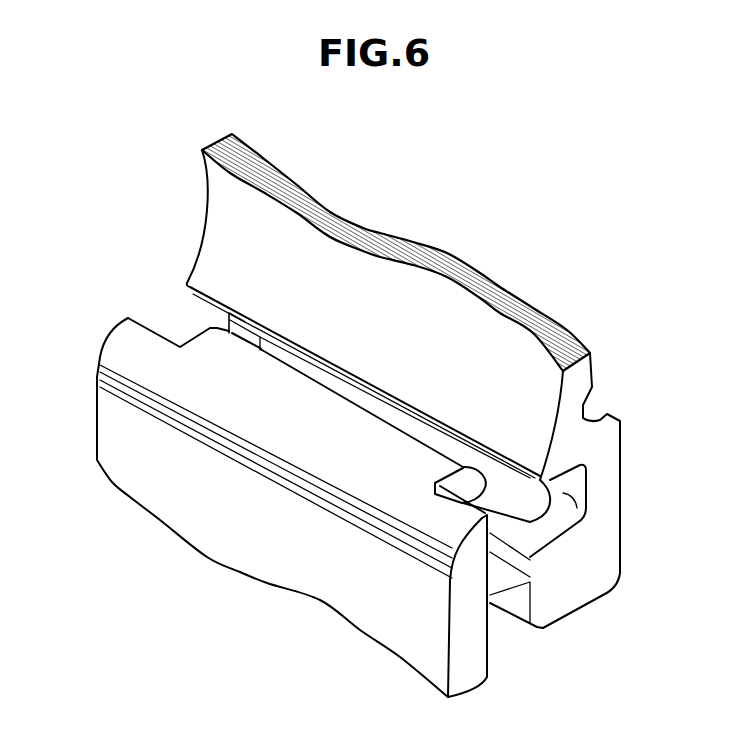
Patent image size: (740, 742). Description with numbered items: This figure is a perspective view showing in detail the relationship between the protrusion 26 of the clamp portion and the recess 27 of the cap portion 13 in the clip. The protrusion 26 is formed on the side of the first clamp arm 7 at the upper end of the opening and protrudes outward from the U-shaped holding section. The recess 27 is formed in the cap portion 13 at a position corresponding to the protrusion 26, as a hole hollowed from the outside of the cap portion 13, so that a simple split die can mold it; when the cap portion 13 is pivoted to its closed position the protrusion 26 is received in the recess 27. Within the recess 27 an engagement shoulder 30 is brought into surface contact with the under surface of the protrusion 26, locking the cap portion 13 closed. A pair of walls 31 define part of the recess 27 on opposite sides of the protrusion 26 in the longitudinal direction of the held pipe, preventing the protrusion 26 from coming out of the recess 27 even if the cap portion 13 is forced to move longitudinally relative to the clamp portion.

The first clamp arm 7 is at (96, 393).
The cap portion 13 is at (580, 400).
The protrusion 26 is at (318, 400).
The recess 27 is at (518, 493).
The engagement shoulder 30 is at (463, 497).
The walls 31 is at (229, 317).